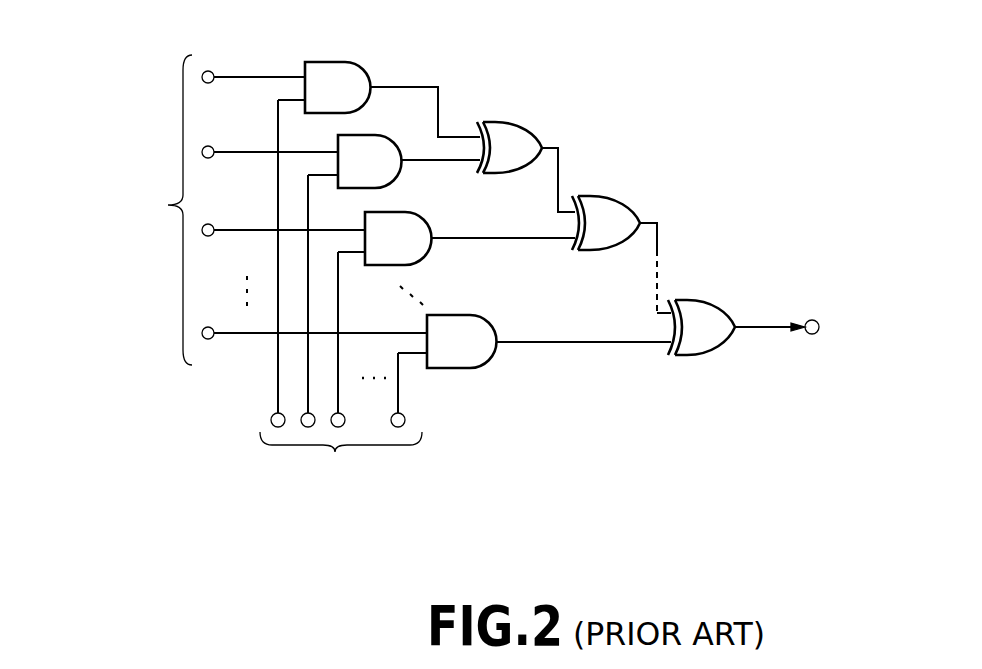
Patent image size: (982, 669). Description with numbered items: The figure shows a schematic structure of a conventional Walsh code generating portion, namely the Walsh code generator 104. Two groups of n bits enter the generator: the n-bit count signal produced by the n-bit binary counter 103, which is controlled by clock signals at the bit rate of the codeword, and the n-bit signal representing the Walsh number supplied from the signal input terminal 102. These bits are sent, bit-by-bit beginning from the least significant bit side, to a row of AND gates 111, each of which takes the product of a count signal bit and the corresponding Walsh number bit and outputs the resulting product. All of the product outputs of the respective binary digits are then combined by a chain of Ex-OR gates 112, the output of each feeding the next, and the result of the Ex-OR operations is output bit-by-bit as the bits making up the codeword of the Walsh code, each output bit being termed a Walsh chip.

The signal input terminal 102 is at (335, 454).
The binary counter 103 is at (146, 210).
The Walsh code generator 104 is at (476, 278).
The AND gates 111 is at (362, 66).
The Ex-OR gates 112 is at (523, 127).